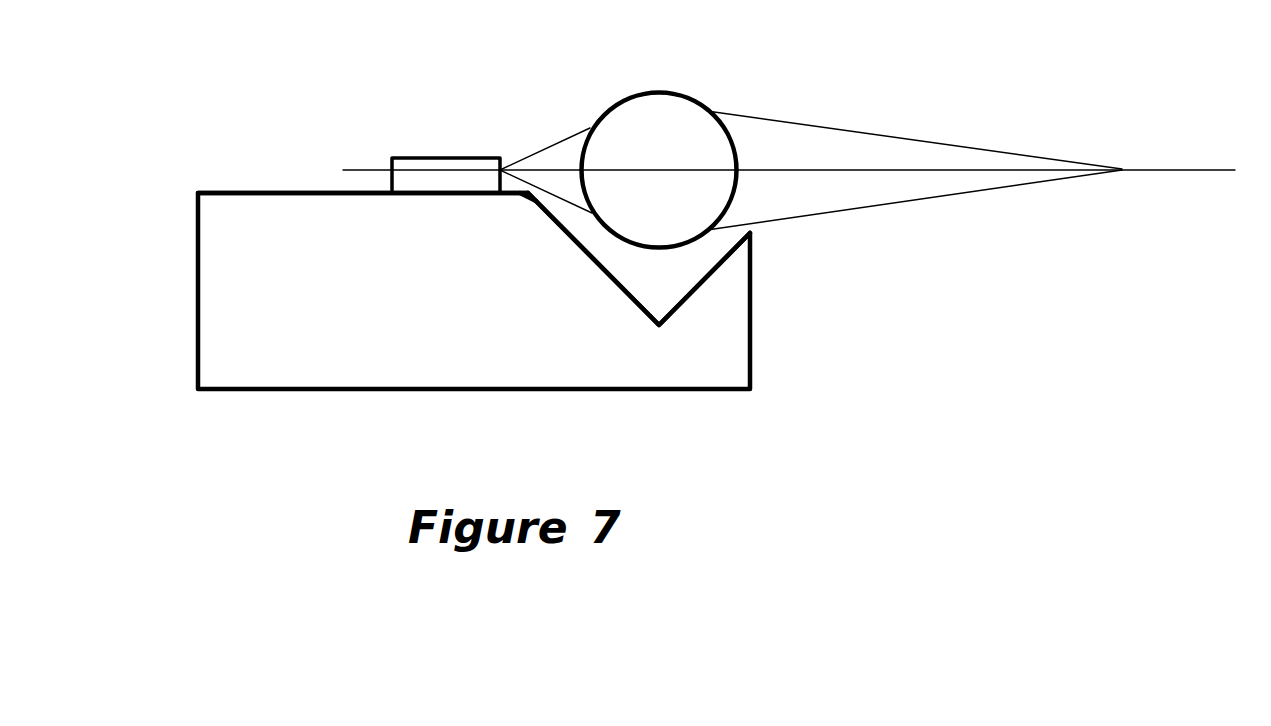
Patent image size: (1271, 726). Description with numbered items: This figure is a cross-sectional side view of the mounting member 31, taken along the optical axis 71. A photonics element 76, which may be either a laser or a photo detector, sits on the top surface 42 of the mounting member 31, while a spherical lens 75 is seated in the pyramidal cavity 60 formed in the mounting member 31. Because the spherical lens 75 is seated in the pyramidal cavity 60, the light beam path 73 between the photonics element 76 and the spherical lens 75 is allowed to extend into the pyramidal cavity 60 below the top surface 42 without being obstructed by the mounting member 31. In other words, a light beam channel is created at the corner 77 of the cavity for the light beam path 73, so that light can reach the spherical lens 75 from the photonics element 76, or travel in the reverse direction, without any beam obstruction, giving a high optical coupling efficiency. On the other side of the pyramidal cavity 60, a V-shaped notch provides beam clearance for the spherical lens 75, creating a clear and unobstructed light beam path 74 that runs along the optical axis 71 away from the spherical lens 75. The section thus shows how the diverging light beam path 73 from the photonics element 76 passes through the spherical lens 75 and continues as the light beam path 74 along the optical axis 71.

The mounting member 31 is at (197, 302).
The top surface 42 is at (245, 193).
The pyramidal cavity 60 is at (715, 277).
The optical axis 71 is at (1143, 170).
The light beam path 73 is at (553, 145).
The light beam path 74 is at (897, 135).
The spherical lens 75 is at (672, 93).
The photonics element 76 is at (440, 158).
The corner 77 is at (527, 197).